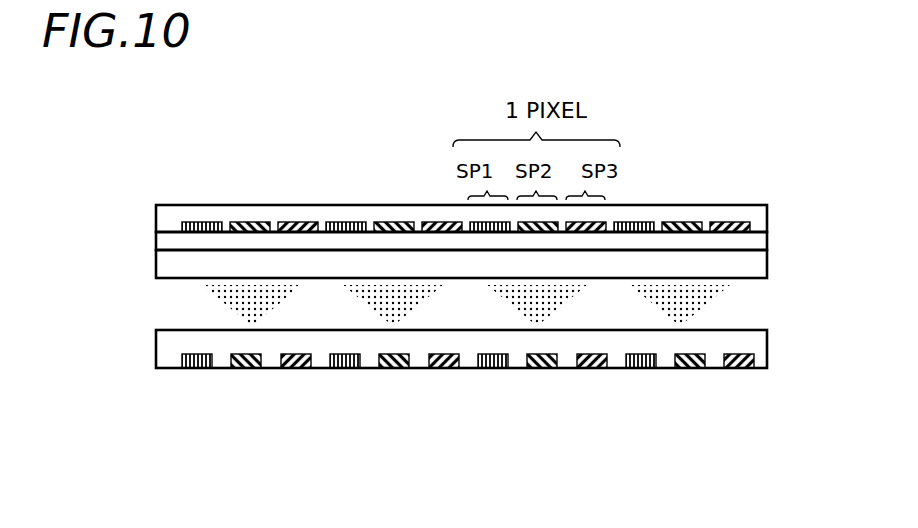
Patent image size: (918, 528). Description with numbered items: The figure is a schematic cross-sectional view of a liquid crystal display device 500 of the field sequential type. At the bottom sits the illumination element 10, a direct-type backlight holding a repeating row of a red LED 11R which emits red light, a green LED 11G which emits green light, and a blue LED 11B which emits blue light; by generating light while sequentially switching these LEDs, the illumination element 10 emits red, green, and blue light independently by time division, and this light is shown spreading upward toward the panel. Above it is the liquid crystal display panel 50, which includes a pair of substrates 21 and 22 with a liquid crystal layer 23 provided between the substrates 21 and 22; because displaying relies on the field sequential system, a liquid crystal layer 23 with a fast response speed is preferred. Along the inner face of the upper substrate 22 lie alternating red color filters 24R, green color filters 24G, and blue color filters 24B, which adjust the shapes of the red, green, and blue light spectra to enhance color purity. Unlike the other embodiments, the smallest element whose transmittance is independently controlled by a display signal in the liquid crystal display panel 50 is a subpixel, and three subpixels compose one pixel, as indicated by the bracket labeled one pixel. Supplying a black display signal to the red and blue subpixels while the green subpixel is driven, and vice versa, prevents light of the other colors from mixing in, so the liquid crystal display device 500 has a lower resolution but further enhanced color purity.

The liquid crystal display device 500 is at (727, 130).
The liquid crystal display panel 50 is at (148, 207).
The illumination element 10 is at (148, 332).
The substrate 22 is at (757, 219).
The liquid crystal layer 23 is at (757, 239).
The substrate 21 is at (757, 262).
The red color filter 24R is at (203, 223).
The green color filter 24G is at (250, 223).
The blue color filter 24B is at (300, 223).
The red LED 11R is at (194, 369).
The green LED 11G is at (245, 369).
The blue LED 11B is at (295, 369).